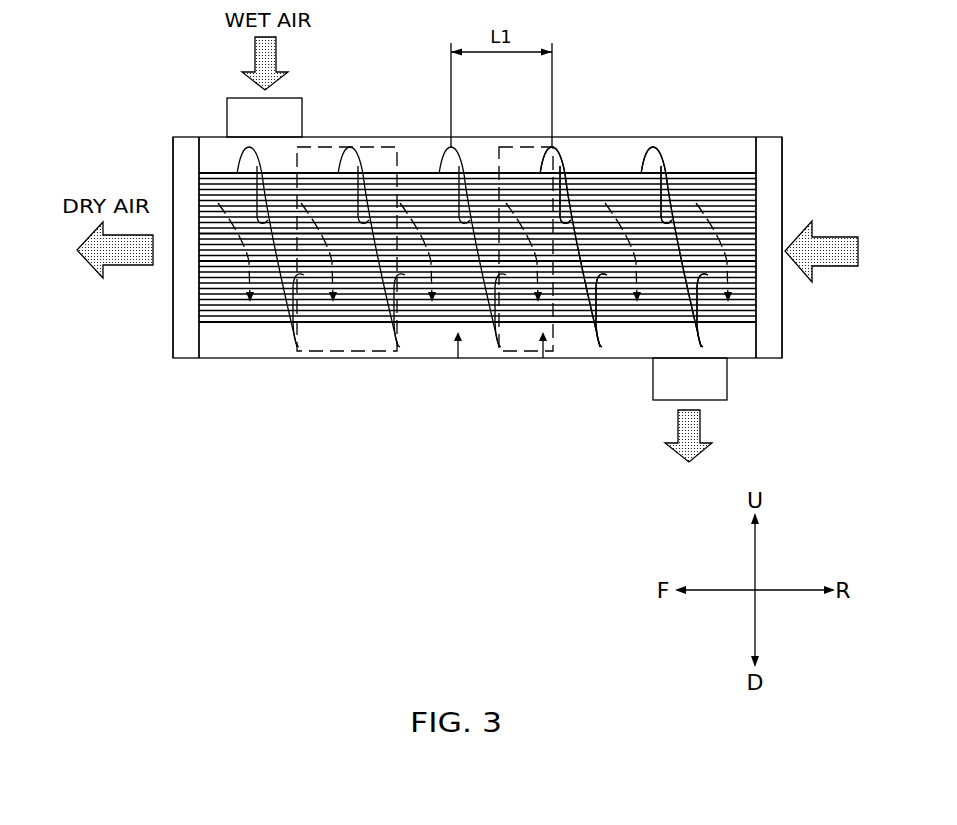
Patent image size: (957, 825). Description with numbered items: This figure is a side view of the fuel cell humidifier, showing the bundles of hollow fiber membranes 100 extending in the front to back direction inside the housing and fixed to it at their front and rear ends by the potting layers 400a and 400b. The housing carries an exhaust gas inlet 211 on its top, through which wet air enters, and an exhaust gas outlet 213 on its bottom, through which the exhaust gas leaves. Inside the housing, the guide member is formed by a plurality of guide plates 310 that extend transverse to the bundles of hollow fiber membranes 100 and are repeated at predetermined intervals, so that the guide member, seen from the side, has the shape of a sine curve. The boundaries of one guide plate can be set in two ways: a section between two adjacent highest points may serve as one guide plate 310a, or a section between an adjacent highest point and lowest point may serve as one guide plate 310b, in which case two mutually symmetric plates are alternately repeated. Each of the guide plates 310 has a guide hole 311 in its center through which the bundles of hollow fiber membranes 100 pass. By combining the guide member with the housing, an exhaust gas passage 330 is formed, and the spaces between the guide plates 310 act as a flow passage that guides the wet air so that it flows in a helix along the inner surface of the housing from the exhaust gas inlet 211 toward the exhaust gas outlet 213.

The bundles of hollow fiber membranes 100 is at (272, 313).
The exhaust gas inlet 211 is at (297, 115).
The exhaust gas outlet 213 is at (667, 384).
The guide plates 310 is at (398, 358).
The guide plate section between two adjacent highest points 310a is at (390, 147).
The guide plate section between adjacent highest and lowest points 310b is at (515, 147).
The guide holes 311 is at (563, 174).
The exhaust gas passage 330 is at (543, 362).
The potting layer 400a is at (187, 350).
The potting layer 400b is at (768, 348).